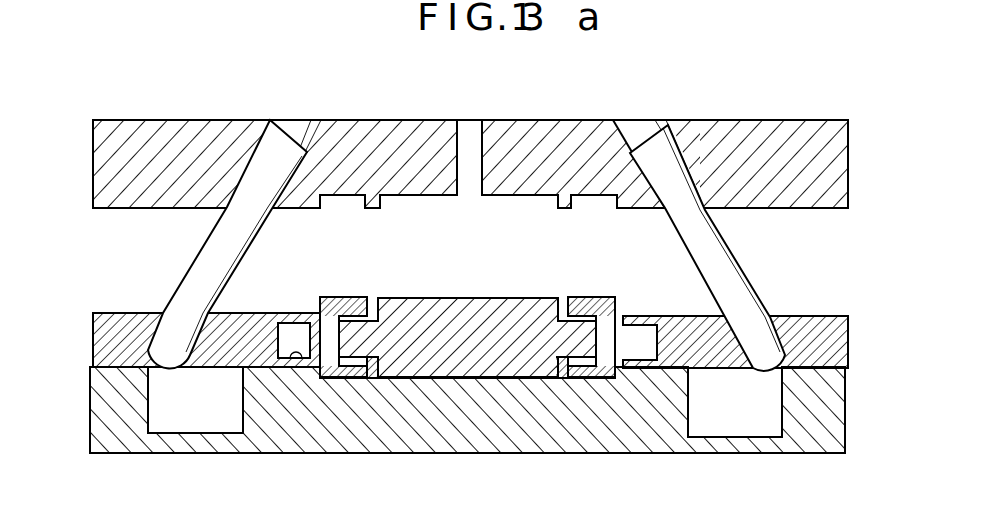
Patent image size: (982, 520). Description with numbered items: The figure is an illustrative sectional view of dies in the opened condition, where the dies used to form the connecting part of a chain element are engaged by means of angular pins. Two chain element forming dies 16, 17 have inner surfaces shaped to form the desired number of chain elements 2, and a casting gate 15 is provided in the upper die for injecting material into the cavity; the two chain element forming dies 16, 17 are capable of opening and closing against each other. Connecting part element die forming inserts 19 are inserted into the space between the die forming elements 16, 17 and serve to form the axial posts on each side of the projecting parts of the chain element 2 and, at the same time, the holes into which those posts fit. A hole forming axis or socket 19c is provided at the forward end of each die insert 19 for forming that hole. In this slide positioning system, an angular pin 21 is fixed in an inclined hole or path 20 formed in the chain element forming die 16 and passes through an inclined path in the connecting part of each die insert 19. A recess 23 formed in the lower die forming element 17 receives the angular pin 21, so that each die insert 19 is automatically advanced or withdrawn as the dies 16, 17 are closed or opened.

The chain element 2 is at (466, 298).
The casting gate 15 is at (477, 130).
The chain element forming die 16 is at (793, 128).
The chain element forming die 17 is at (527, 425).
The die insert 19 is at (253, 313).
The hole forming axis 19c is at (617, 320).
The inclined hole 20 is at (250, 163).
The angular pin 21 is at (250, 222).
The recess 23 is at (205, 425).